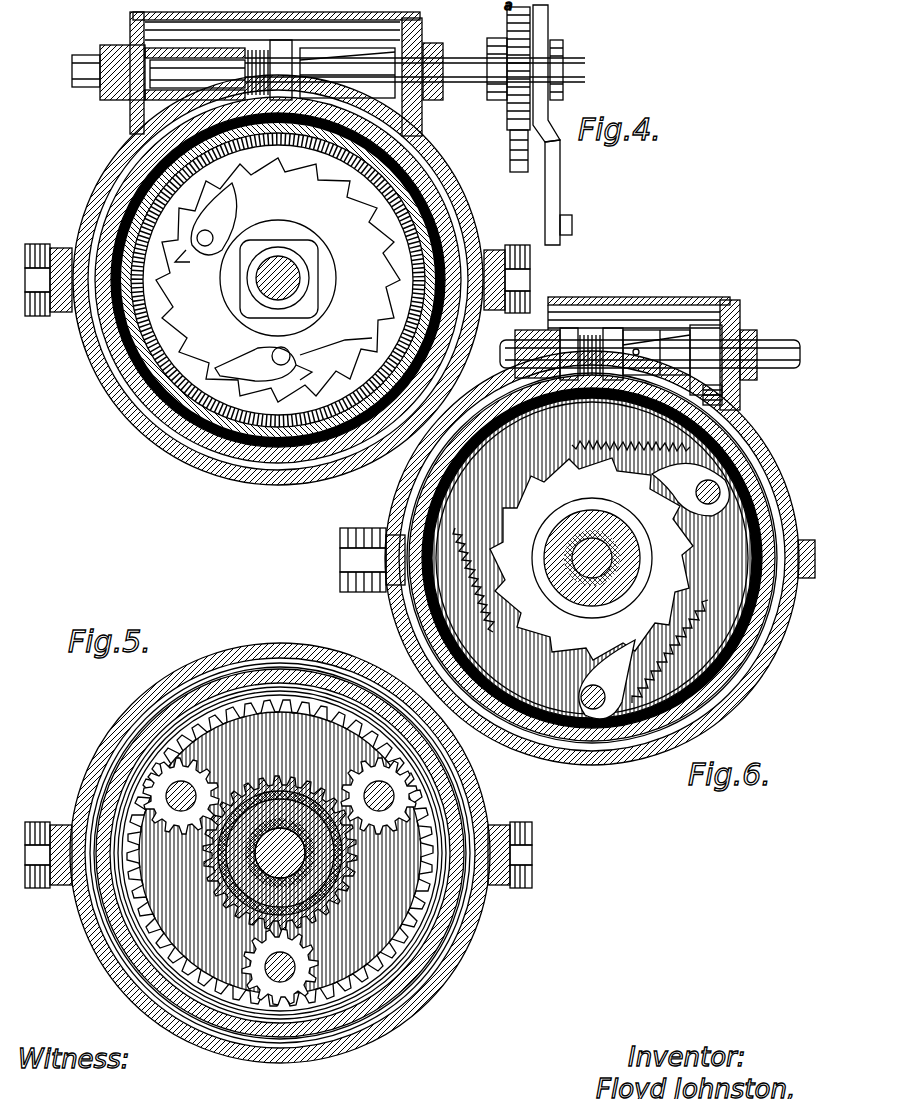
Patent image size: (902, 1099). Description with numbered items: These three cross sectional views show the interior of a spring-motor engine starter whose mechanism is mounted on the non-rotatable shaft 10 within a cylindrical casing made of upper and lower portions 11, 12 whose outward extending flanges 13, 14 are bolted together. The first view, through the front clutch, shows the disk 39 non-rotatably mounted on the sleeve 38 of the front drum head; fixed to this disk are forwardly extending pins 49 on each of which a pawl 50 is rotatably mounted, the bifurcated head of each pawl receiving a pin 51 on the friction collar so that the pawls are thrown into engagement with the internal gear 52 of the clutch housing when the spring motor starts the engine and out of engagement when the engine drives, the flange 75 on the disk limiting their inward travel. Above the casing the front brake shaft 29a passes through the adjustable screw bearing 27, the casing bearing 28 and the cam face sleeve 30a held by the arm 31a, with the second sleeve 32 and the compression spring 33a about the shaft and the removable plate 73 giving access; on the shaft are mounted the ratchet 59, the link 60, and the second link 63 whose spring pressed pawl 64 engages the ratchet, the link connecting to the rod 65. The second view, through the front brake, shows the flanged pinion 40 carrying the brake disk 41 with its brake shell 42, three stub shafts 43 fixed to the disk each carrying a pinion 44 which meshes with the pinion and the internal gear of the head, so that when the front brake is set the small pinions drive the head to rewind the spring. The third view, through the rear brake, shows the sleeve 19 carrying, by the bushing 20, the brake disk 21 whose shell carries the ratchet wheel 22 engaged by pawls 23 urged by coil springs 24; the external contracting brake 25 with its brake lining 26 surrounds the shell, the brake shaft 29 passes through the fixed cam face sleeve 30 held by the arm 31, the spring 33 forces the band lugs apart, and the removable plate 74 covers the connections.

In FIG. 4, the non-rotatable shaft 10 is at (283, 262).
In FIG. 6, the non-rotatable shaft 10 is at (612, 558).
In FIG. 5, the non-rotatable shaft 10 is at (340, 866).
In FIG. 4, the upper casing portion 11 is at (108, 170).
In FIG. 6, the upper casing portion 11 is at (400, 488).
In FIG. 5, the upper casing portion 11 is at (236, 660).
In FIG. 4, the lower casing portion 12 is at (128, 408).
In FIG. 6, the lower casing portion 12 is at (398, 625).
In FIG. 5, the lower casing portion 12 is at (314, 1062).
In FIG. 4, the outward extending flange 13 is at (28, 268).
In FIG. 6, the outward extending flange 13 is at (345, 540).
In FIG. 5, the outward extending flange 13 is at (534, 838).
In FIG. 4, the outward extending flange 14 is at (40, 316).
In FIG. 6, the outward extending flange 14 is at (345, 582).
In FIG. 5, the outward extending flange 14 is at (534, 860).
In FIG. 6, the sleeve 19 is at (626, 536).
In FIG. 6, the bushing 20 is at (638, 592).
In FIG. 6, the brake disk 21 is at (748, 648).
In FIG. 6, the ratchet wheel 22 is at (592, 558).
In FIG. 6, the pawl 23 is at (672, 490).
In FIG. 6, the coil spring 24 is at (600, 452).
In FIG. 6, the external contracting brake 25 is at (748, 698).
In FIG. 6, the brake lining 26 is at (740, 672).
In FIG. 4, the adjustable screw bearing 27 is at (88, 55).
In FIG. 4, the bearing 28 is at (420, 42).
In FIG. 6, the bearing 28 is at (750, 330).
In FIG. 6, the brake shaft 29 is at (775, 342).
In FIG. 4, the brake shaft 29a is at (470, 48).
In FIG. 6, the cam face sleeve 30 is at (732, 300).
In FIG. 4, the cam face sleeve 30a is at (350, 73).
In FIG. 6, the arm 31 is at (742, 395).
In FIG. 4, the arm 31a is at (435, 98).
In FIG. 4, the second sleeve 32 is at (292, 50).
In FIG. 6, the second sleeve 32 is at (640, 330).
In FIG. 6, the compression spring 33 is at (592, 330).
In FIG. 4, the compression spring 33a is at (197, 73).
In FIG. 5, the sleeve 38 is at (232, 900).
In FIG. 4, the disk 39 is at (278, 280).
In FIG. 5, the flanged pinion 40 is at (440, 920).
In FIG. 4, the brake disk 41 is at (195, 430).
In FIG. 4, the brake shell 42 is at (250, 445).
In FIG. 5, the stub shaft 43 is at (160, 792).
In FIG. 5, the pinion 44 is at (168, 780).
In FIG. 4, the pin 49 is at (206, 248).
In FIG. 4, the pawl 50 is at (232, 205).
In FIG. 4, the pin 51 is at (249, 315).
In FIG. 4, the internal gear 52 is at (336, 351).
In FIG. 4, the ratchet 59 is at (510, 32).
In FIG. 4, the link 60 is at (548, 26).
In FIG. 4, the second link 63 is at (560, 180).
In FIG. 4, the spring pressed pawl 64 is at (520, 165).
In FIG. 4, the rod 65 is at (570, 222).
In FIG. 4, the removable plate 73 is at (128, 45).
In FIG. 6, the removable plate 74 is at (700, 300).
In FIG. 4, the flange 75 is at (320, 300).